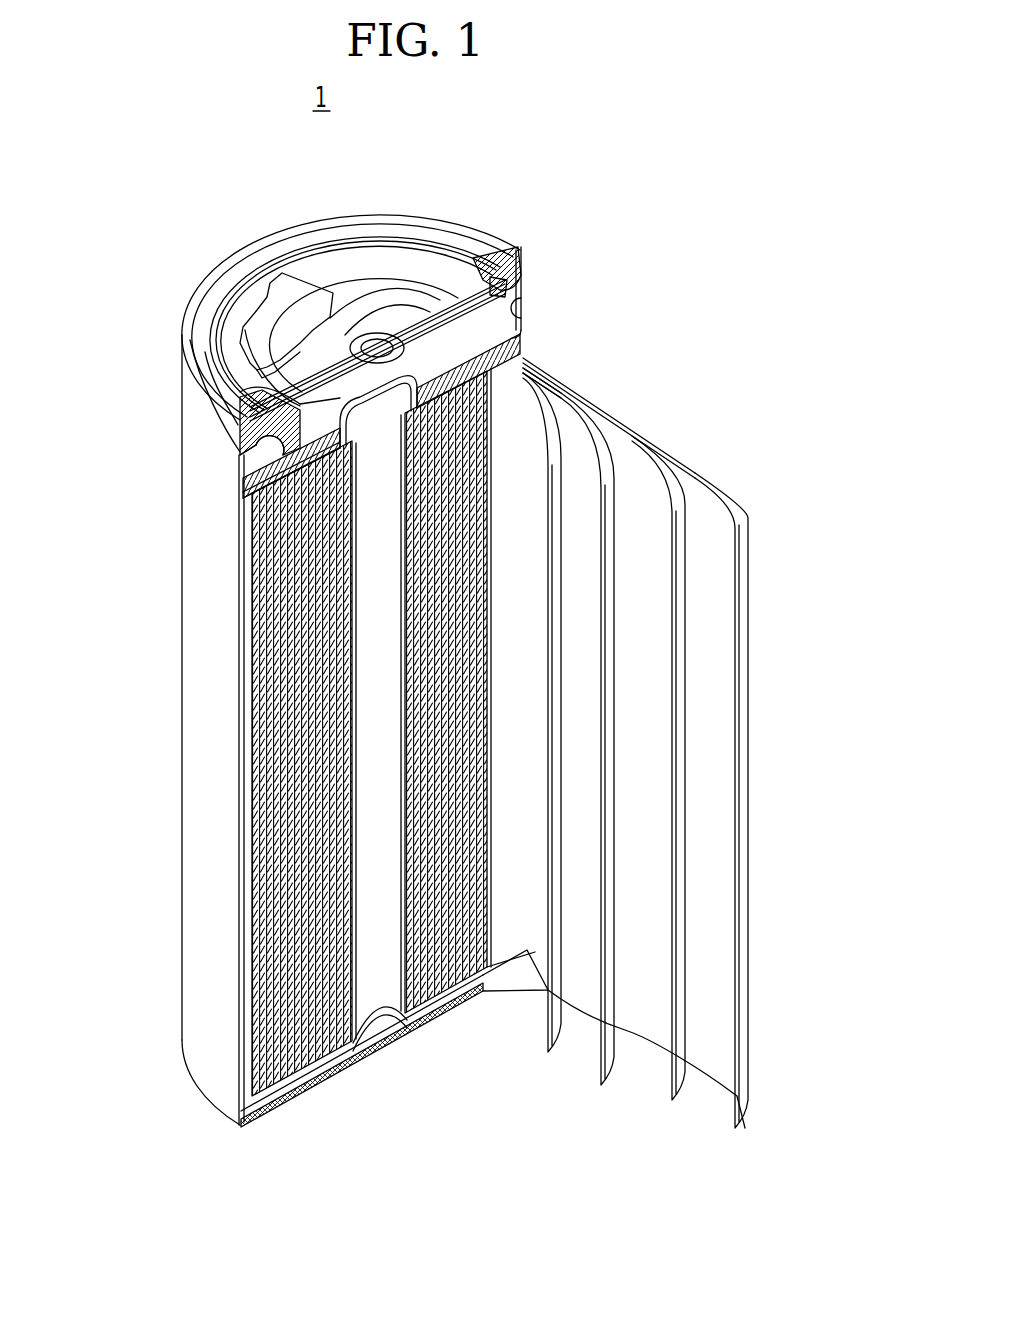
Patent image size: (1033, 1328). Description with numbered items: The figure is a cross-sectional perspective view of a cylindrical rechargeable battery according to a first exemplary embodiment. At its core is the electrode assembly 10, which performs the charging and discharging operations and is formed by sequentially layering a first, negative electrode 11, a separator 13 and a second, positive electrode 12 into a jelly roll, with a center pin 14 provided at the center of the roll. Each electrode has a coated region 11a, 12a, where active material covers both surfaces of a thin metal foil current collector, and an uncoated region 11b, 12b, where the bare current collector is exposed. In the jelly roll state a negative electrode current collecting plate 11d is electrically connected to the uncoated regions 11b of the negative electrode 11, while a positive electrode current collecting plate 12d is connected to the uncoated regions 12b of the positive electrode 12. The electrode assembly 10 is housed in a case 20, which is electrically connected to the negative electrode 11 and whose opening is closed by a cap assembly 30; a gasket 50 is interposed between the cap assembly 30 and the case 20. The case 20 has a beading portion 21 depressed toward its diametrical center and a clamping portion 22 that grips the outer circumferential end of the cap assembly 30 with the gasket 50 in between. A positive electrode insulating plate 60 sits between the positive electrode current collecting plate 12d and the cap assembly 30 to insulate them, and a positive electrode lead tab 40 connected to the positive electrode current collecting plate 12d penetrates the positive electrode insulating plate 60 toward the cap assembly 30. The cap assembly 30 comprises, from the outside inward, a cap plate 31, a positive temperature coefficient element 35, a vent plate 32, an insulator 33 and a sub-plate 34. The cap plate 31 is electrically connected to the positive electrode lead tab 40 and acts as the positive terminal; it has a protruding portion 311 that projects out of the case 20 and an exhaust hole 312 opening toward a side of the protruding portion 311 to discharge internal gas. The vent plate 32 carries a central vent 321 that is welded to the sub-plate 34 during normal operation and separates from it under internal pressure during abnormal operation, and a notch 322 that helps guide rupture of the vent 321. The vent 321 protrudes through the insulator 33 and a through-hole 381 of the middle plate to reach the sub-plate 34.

The electrode assembly 10 is at (262, 874).
The first electrode 11 is at (394, 1050).
The coated region 11a is at (527, 957).
The uncoated region 11b is at (535, 987).
The negative electrode current collecting plate 11d is at (310, 1067).
The second electrode 12 is at (635, 724).
The coated region 12a is at (652, 477).
The uncoated region 12b is at (640, 445).
The positive electrode current collecting plate 12d is at (273, 485).
The separator 13 is at (740, 1110).
The center pin 14 is at (377, 992).
The case 20 is at (195, 668).
The beading portion 21 is at (255, 448).
The clamping portion 22 is at (208, 401).
The cap assembly 30 is at (226, 345).
The cap plate 31 is at (418, 255).
The protruding portion 311 is at (310, 266).
The exhaust hole 312 is at (240, 283).
The vent plate 32 is at (414, 322).
The vent 321 is at (373, 340).
The notch 322 is at (390, 300).
The insulator 33 is at (262, 385).
The sub-plate 34 is at (495, 311).
The positive temperature coefficient element 35 is at (500, 272).
The through-hole 381 is at (368, 402).
The positive electrode lead tab 40 is at (478, 400).
The gasket 50 is at (518, 288).
The positive electrode insulating plate 60 is at (277, 477).